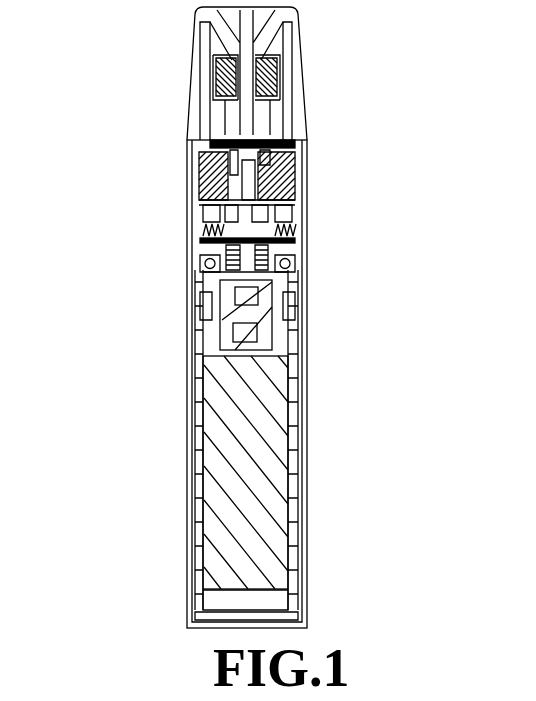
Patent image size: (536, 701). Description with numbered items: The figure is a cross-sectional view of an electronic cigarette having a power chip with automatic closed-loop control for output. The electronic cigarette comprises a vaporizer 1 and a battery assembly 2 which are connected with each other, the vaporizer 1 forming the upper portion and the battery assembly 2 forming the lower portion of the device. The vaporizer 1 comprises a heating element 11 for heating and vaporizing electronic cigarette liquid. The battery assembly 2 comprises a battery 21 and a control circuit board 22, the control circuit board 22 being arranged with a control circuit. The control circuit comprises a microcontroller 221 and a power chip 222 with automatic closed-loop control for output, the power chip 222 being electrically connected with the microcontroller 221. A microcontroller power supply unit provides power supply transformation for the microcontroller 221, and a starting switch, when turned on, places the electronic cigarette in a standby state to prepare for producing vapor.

The vaporizer 1 is at (266, 74).
The heating element 11 is at (340, 81).
The battery assembly 2 is at (252, 381).
The battery 21 is at (336, 472).
The control circuit board 22 is at (240, 242).
The microcontroller 221 is at (146, 219).
The power chip 222 is at (146, 278).